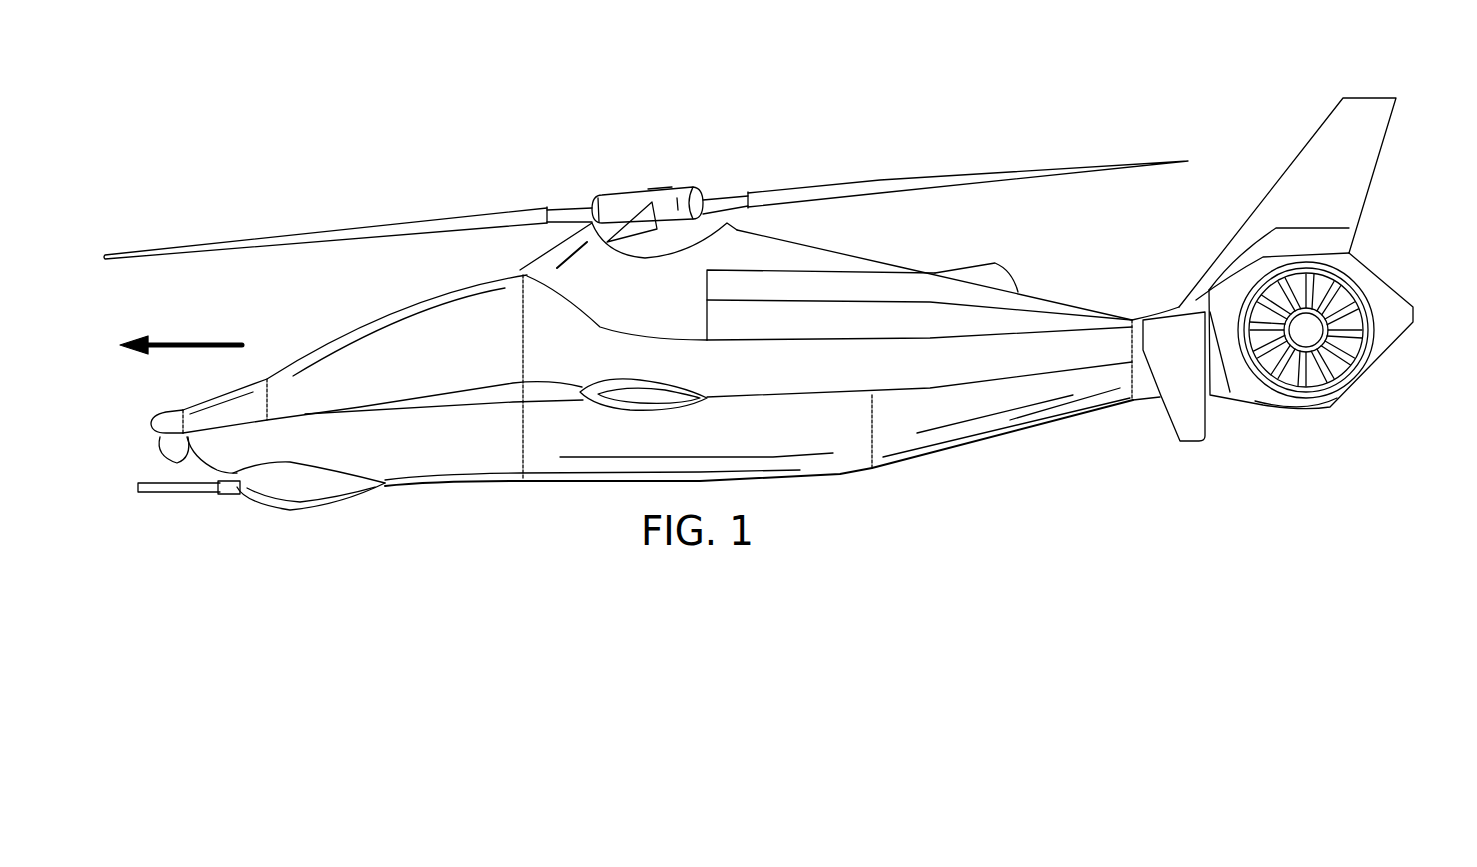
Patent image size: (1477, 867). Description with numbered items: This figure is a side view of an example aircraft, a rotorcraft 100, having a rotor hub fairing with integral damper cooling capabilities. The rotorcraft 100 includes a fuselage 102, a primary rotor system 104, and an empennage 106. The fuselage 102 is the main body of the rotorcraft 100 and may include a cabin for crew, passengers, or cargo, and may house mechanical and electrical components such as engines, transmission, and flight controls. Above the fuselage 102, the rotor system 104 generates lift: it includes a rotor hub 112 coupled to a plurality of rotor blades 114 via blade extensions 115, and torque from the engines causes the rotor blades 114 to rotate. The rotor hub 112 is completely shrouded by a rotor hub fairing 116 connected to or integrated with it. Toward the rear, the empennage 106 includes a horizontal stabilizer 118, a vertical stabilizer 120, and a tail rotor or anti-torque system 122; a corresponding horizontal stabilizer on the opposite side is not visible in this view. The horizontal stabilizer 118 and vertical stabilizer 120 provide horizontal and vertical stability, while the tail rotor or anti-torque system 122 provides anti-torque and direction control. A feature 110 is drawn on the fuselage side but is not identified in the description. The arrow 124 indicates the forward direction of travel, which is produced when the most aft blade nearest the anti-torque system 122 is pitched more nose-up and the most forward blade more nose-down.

The rotorcraft 100 is at (293, 80).
The fuselage 102 is at (850, 365).
The primary rotor system 104 is at (677, 90).
The empennage 106 is at (1408, 204).
The fairing 110 is at (665, 378).
The rotor hub 112 is at (667, 178).
The rotor blades 114 is at (305, 228).
The blade extensions 115 is at (566, 205).
The rotor hub fairing 116 is at (633, 190).
The horizontal stabilizer 118 is at (1194, 441).
The vertical stabilizer 120 is at (1398, 122).
The tail rotor or anti-torque system 122 is at (1335, 396).
The arrow 124 is at (196, 337).